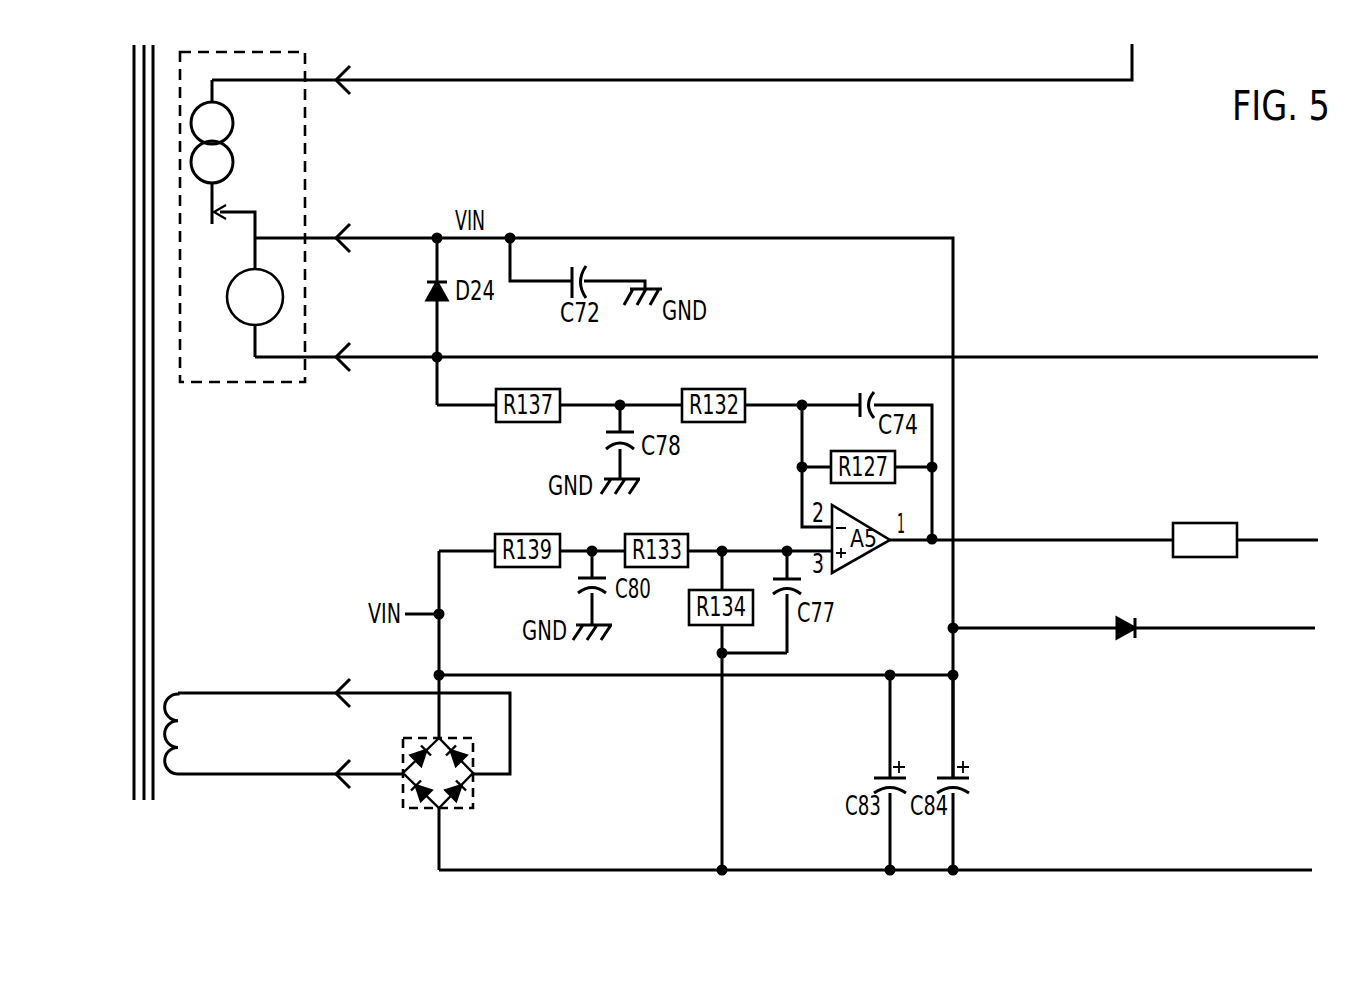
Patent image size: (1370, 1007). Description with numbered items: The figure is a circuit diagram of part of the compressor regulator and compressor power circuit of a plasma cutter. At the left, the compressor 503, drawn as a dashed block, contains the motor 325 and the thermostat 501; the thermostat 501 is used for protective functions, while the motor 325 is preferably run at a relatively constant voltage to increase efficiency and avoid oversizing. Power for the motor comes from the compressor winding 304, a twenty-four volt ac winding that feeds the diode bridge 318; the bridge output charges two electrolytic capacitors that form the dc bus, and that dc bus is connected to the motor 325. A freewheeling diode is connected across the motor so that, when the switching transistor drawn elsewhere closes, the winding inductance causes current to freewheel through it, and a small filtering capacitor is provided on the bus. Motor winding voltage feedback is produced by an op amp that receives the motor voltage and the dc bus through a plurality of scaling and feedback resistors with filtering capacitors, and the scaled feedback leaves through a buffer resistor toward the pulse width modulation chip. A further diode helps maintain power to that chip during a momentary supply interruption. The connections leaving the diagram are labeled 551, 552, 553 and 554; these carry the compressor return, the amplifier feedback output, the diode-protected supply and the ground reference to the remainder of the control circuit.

The compressor winding 304 is at (166, 703).
The diode bridge 318 is at (463, 808).
The motor 325 is at (233, 321).
The thermostat 501 is at (231, 143).
The compressor 503 is at (305, 174).
The compressor return line 551 is at (1282, 358).
The amplifier output line 552 is at (1278, 540).
The supply output line 553 is at (1282, 629).
The ground line 554 is at (1283, 870).